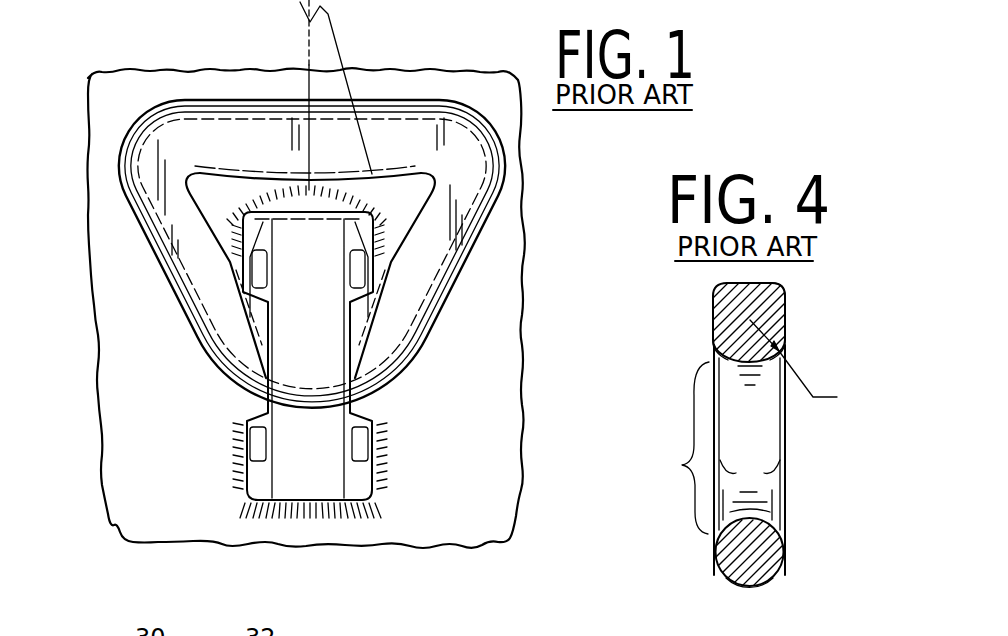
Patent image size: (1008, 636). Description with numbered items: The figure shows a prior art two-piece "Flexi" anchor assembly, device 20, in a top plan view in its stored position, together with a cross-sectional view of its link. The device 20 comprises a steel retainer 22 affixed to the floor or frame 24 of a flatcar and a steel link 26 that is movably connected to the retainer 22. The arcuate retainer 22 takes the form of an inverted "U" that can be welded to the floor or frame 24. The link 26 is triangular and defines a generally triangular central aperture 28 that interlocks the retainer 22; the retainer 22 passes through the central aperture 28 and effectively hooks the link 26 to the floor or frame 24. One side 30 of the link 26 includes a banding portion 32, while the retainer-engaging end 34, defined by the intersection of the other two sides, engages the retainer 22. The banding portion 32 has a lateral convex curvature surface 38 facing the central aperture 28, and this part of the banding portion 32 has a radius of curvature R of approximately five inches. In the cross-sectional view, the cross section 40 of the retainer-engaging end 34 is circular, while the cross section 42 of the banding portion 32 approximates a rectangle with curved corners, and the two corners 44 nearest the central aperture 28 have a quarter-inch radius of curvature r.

In FIG. 1, the device 20 is at (122, 107).
In FIG. 1, the retainer 22 is at (320, 427).
In FIG. 1, the floor or frame 24 is at (470, 428).
In FIG. 1, the link 26 is at (398, 196).
In FIG. 4, the link 26 is at (765, 433).
In FIG. 1, the central aperture 28 is at (351, 212).
In FIG. 4, the central aperture 28 is at (676, 448).
In FIG. 1, the side 30 is at (410, 101).
In FIG. 1, the banding portion 32 is at (220, 134).
In FIG. 4, the banding portion 32 is at (713, 310).
In FIG. 4, the retainer-engaging end 34 is at (716, 564).
In FIG. 1, the lateral convex curvature surface 38 is at (219, 176).
In FIG. 4, the cross section of the retainer-engaging end 40 is at (748, 582).
In FIG. 4, the cross section of the banding portion 42 is at (775, 310).
In FIG. 4, the corners 44 is at (780, 352).
In FIG. 1, the radius of curvature R is at (340, 45).
In FIG. 4, the radius of curvature r is at (808, 378).